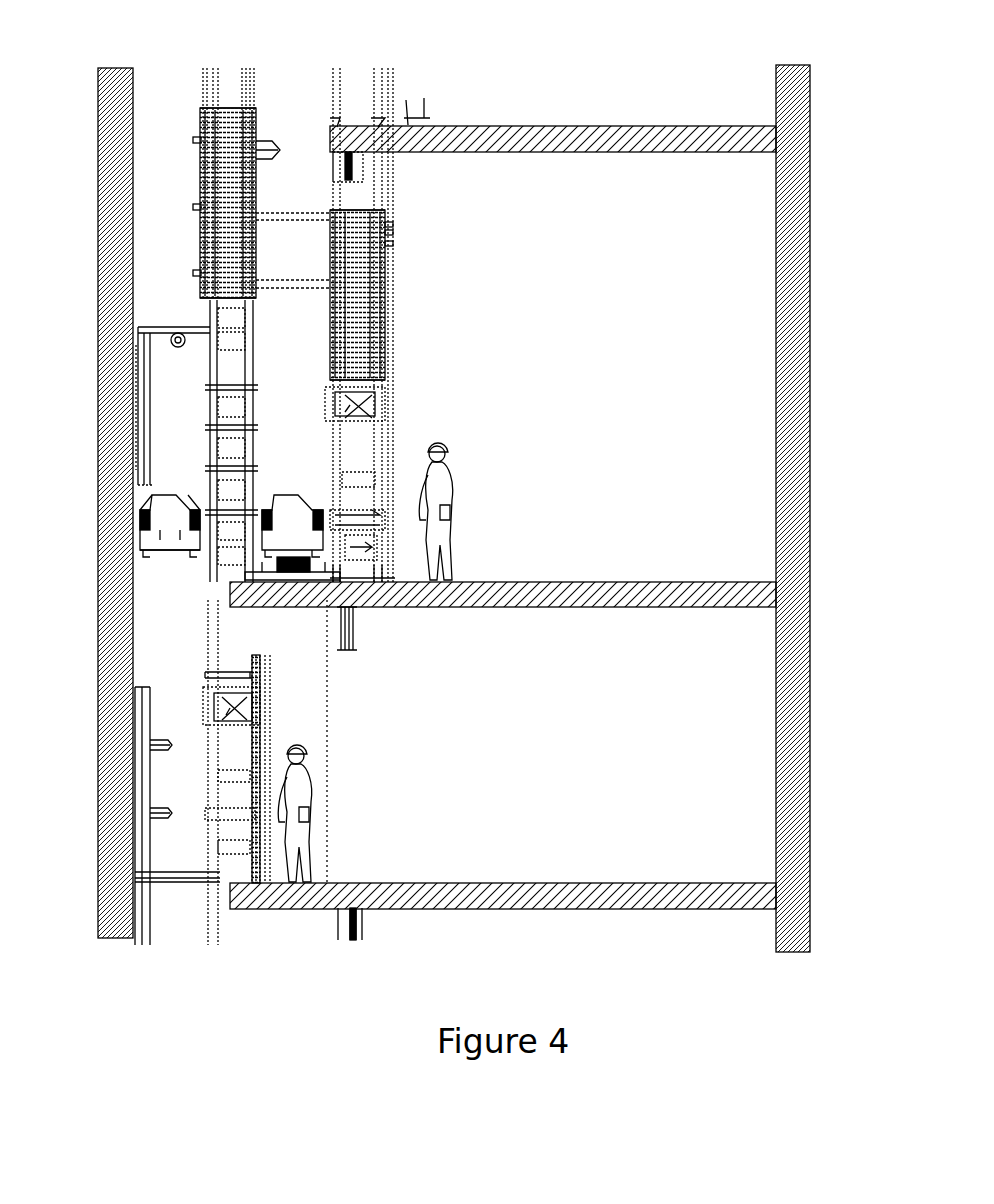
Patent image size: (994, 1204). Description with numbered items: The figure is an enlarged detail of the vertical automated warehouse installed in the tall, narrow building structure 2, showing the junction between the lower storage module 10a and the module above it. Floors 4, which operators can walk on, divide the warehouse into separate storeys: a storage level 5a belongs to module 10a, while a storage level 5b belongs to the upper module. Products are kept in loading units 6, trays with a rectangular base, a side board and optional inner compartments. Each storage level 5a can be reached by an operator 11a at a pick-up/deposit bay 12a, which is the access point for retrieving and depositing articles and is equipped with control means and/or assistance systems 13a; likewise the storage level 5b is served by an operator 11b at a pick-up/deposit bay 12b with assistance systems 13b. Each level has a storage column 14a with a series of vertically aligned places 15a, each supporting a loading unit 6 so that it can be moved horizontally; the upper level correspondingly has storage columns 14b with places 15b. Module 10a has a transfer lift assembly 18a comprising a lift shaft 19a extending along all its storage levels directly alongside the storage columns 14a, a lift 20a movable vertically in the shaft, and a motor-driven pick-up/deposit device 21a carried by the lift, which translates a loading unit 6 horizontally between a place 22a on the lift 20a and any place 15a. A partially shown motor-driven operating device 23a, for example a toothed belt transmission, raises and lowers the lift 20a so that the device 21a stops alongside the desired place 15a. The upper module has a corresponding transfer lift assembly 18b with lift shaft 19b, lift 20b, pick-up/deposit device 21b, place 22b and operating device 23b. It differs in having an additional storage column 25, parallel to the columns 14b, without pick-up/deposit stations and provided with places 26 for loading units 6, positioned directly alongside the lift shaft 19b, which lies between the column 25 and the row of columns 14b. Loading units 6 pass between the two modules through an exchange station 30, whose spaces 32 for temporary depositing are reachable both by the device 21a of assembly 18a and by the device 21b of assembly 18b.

The building structure 2 is at (795, 258).
The floors 4 is at (710, 150).
The storage level 5a is at (676, 799).
The storage level 5b is at (620, 221).
The loading unit 6 is at (387, 284).
The storage module 10a is at (720, 695).
The operator 11a is at (305, 783).
The operator 11b is at (452, 483).
The pick-up/deposit bay 12a is at (233, 803).
The pick-up/deposit bay 12b is at (358, 485).
The control means and/or assistance systems 13a is at (268, 725).
The control means and/or assistance systems 13b is at (380, 390).
The storage column 14a is at (275, 648).
The storage column 14b is at (400, 176).
The place 15a is at (200, 672).
The place 15b is at (395, 225).
The transfer lift assembly 18a is at (160, 380).
The transfer lift assembly 18b is at (297, 148).
The lift shaft 19a is at (152, 918).
The lift shaft 19b is at (280, 330).
The lift 20a is at (140, 548).
The lift 20b is at (375, 567).
The pick-up/deposit device 21a is at (148, 500).
The pick-up/deposit device 21b is at (375, 530).
The place 22a is at (145, 520).
The place 22b is at (312, 500).
The operating device 23a is at (185, 328).
The operating device 23b is at (296, 582).
The additional storage column 25 is at (252, 112).
The places 26 is at (198, 182).
The exchange station 30 is at (256, 408).
The spaces 32 is at (203, 508).